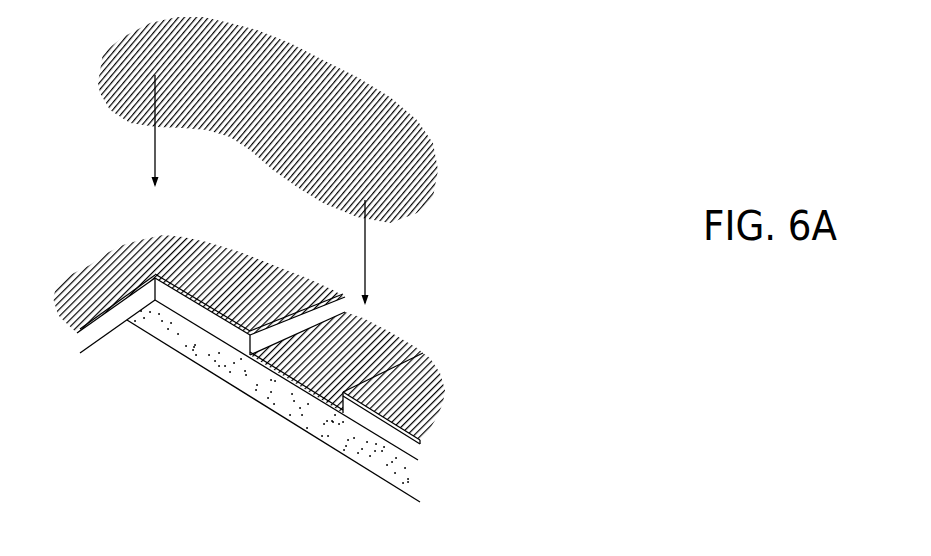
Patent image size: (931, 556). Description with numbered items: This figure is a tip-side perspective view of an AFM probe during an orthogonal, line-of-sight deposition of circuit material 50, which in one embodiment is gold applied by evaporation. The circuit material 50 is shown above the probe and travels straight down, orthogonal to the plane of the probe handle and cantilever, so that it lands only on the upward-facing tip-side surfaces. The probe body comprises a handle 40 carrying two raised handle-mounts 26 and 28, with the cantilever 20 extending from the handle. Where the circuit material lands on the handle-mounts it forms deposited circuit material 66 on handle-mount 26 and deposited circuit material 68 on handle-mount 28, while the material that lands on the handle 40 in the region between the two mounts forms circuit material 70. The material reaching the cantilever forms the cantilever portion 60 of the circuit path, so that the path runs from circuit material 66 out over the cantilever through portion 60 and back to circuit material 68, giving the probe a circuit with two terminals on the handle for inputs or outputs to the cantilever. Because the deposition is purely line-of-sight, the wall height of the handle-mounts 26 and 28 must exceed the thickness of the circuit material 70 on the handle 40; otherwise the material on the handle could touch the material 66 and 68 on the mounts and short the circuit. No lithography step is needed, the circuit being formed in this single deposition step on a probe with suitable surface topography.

The circuit material 50 is at (363, 120).
The cantilever 20 is at (97, 333).
The handle-mount 26 is at (240, 342).
The handle-mount 28 is at (388, 433).
The handle 40 is at (323, 427).
The circuit material on cantilever 60 is at (95, 280).
The circuit material on handle-mount 66 is at (240, 278).
The circuit material on handle-mount 68 is at (408, 402).
The circuit material on handle 70 is at (367, 347).